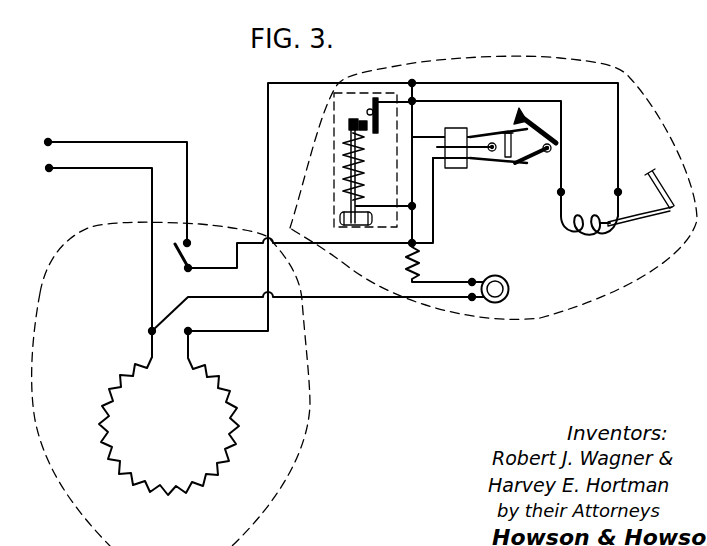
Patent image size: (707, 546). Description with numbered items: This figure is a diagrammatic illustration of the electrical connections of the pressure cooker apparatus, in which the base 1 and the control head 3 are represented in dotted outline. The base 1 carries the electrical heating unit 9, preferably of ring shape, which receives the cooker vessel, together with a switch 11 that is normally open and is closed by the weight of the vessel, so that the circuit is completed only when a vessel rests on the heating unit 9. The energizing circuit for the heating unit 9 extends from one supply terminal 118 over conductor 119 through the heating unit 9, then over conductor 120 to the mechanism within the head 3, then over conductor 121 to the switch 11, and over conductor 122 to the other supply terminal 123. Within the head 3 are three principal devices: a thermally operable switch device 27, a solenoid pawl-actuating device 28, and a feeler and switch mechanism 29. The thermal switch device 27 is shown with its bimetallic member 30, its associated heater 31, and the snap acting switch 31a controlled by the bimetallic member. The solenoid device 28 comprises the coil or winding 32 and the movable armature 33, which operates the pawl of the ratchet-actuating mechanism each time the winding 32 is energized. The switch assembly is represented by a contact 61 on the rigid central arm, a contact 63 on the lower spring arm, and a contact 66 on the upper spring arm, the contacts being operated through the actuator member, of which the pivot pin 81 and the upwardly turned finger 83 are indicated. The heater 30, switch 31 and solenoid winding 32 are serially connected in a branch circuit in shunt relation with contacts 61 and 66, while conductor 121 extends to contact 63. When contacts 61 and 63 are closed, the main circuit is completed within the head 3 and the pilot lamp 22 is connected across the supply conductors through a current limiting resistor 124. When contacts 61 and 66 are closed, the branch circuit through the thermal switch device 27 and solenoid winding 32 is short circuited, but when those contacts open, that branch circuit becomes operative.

The base 1 is at (310, 407).
The control head 3 is at (588, 305).
The electrical heating unit 9 is at (230, 455).
The switch 11 is at (190, 250).
The pilot lamp 22 is at (495, 302).
The thermally operable switch device 27 is at (326, 175).
The solenoid pawl-actuating device 28 is at (589, 214).
The feeler and switch mechanism 29 is at (482, 170).
The bimetallic member 30 is at (352, 150).
The heater 31 is at (345, 137).
The switch 31a is at (367, 117).
The solenoid winding 32 is at (593, 237).
The armature 33 is at (650, 215).
The contact 61 is at (492, 137).
The contact 63 is at (494, 161).
The contact 66 is at (492, 137).
The pivot pin 81 is at (552, 148).
The finger 83 is at (540, 122).
The supply terminal 118 is at (48, 172).
The conductor 119 is at (152, 203).
The conductor 120 is at (268, 100).
The conductor 121 is at (300, 247).
The conductor 122 is at (187, 148).
The supply terminal 123 is at (50, 138).
The current limiting resistor 124 is at (420, 262).